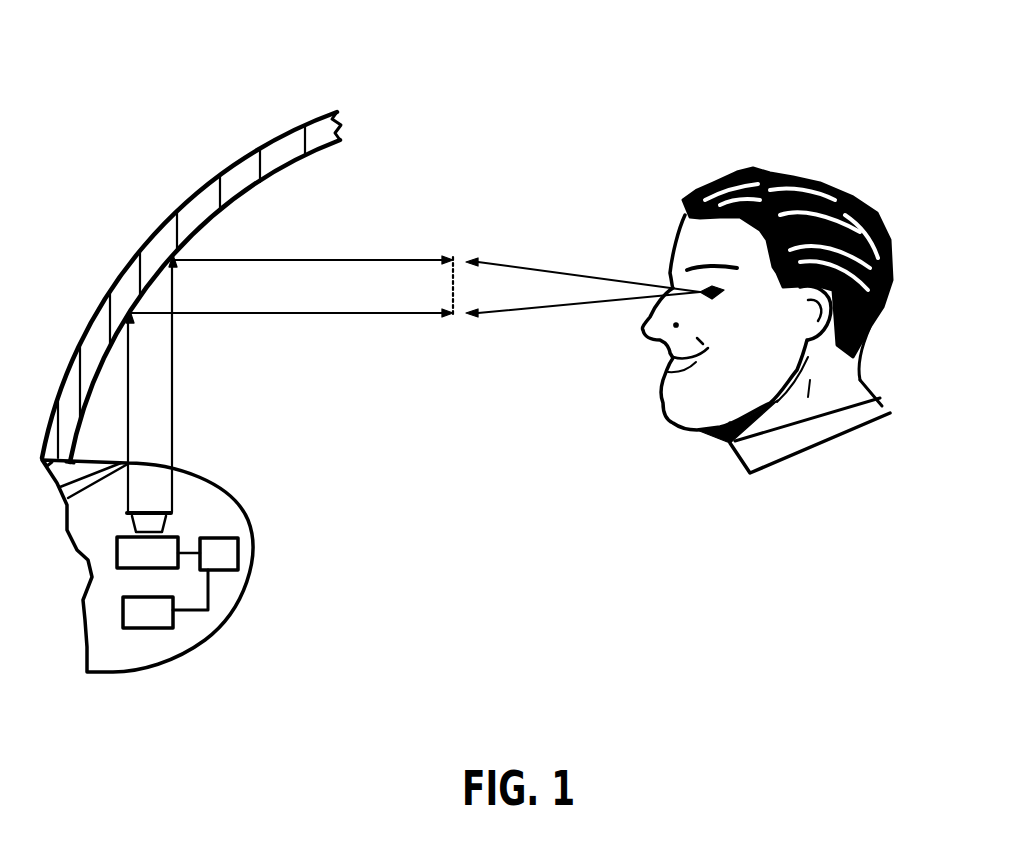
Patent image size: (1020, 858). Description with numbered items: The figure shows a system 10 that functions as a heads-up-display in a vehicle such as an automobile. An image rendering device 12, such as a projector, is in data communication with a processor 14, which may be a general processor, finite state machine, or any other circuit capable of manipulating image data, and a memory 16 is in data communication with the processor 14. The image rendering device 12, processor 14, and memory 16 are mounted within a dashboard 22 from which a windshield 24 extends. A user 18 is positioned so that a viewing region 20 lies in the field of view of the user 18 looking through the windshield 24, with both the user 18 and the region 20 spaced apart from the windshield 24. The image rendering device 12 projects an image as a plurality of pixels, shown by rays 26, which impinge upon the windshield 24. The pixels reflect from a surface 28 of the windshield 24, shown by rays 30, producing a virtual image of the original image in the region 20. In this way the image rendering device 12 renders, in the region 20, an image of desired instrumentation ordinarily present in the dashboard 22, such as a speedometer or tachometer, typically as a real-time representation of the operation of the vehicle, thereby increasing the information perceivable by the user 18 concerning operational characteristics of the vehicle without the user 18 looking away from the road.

The system 10 is at (104, 560).
The image rendering device 12 is at (178, 533).
The processor 14 is at (238, 555).
The memory 16 is at (155, 630).
The user 18 is at (822, 152).
The viewing region 20 is at (436, 288).
The dashboard 22 is at (187, 474).
The windshield 24 is at (342, 130).
The rays 26 is at (128, 410).
The surface 28 is at (240, 202).
The rays 30 is at (297, 260).